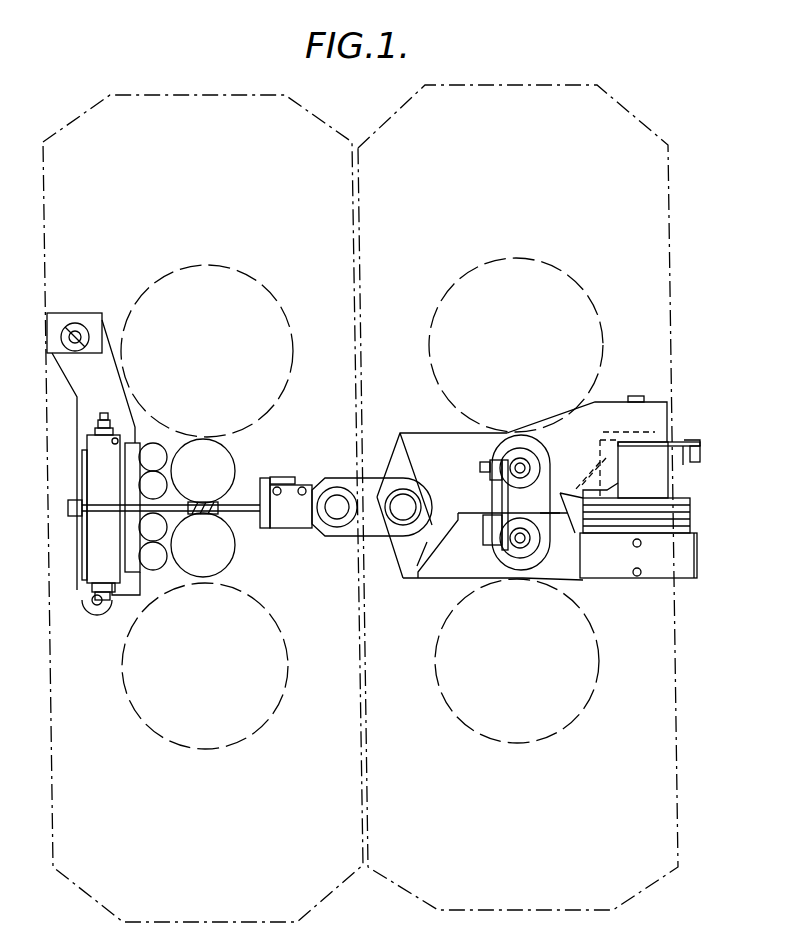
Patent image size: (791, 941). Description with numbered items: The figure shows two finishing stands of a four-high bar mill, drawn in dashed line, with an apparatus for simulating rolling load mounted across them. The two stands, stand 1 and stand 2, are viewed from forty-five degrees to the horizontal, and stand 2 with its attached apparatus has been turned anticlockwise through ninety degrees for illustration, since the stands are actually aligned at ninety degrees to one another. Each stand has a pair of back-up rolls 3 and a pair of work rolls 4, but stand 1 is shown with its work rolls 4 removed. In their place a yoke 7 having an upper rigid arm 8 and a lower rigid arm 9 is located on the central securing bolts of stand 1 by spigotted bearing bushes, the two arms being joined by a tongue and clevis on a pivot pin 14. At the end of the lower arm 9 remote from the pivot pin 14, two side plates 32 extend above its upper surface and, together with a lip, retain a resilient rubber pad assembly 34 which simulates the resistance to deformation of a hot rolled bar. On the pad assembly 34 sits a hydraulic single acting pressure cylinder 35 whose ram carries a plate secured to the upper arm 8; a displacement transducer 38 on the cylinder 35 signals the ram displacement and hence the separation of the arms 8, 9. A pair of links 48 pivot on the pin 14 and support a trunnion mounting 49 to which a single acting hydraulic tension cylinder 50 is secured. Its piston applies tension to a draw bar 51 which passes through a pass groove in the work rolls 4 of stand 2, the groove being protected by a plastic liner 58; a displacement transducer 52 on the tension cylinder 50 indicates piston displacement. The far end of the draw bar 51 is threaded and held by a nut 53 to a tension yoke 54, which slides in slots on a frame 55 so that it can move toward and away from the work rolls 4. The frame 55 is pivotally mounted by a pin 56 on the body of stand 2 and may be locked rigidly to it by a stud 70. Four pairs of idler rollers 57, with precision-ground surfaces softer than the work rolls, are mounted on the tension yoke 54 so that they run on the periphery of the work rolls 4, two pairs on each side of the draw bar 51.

The finishing stand 1 is at (585, 103).
The finishing stand 2 is at (142, 113).
The back-up rolls 3 is at (240, 277).
The work rolls 4 is at (210, 455).
The yoke 7 is at (605, 388).
The upper rigid arm 8 is at (445, 450).
The lower rigid arm 9 is at (450, 550).
The pivot pin 14 is at (395, 502).
The side plates 32 is at (667, 568).
The resilient rubber pad assembly 34 is at (635, 515).
The hydraulic single acting pressure cylinder 35 is at (648, 470).
The displacement transducer 38 is at (700, 453).
The links 48 is at (355, 485).
The trunnion mounting 49 is at (337, 512).
The single acting hydraulic tension cylinder 50 is at (295, 518).
The draw bar 51 is at (238, 511).
The displacement transducer 52 is at (282, 477).
The nut 53 is at (72, 514).
The tension yoke 54 is at (97, 447).
The frame 55 is at (102, 363).
The pin 56 is at (75, 353).
The idler rollers 57 is at (170, 565).
The plastic liner 58 is at (200, 507).
The stud 70 is at (97, 604).